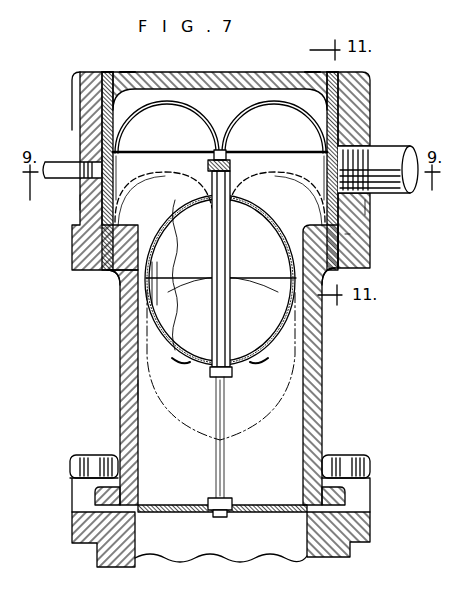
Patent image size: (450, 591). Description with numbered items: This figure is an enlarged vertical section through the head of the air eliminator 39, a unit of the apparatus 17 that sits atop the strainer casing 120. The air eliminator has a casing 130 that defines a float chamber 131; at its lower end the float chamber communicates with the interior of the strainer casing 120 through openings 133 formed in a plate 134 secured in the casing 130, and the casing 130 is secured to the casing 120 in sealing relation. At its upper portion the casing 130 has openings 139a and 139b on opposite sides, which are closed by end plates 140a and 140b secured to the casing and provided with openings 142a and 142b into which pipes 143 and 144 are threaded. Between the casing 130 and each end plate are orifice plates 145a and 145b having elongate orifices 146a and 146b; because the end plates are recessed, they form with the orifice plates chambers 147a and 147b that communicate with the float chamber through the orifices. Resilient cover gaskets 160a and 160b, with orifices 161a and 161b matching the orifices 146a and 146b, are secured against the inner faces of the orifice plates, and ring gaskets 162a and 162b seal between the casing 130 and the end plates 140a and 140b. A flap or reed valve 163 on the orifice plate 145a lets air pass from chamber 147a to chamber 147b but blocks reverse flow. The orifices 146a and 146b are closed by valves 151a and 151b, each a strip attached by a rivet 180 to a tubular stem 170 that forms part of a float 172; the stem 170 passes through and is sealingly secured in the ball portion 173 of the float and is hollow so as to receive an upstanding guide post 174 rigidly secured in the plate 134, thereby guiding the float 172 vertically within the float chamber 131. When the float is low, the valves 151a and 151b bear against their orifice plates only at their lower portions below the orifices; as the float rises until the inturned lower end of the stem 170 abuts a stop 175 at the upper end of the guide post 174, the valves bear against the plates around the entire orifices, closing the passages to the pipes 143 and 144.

The valve 17 is at (445, 354).
The air eliminator 39 is at (60, 389).
The strainer casing 120 is at (97, 556).
The casing 130 is at (316, 425).
The float chamber 131 is at (306, 396).
The openings 133 is at (288, 513).
The plate 134 is at (233, 502).
The opening 139a is at (110, 110).
The opening 139b is at (328, 110).
The end plate 140a is at (88, 120).
The end plate 140b is at (352, 92).
The opening 142a is at (98, 195).
The opening 142b is at (358, 207).
The pipe 143 is at (60, 163).
The pipe 144 is at (395, 148).
The orifice plate 145a is at (108, 276).
The orifice plate 145b is at (340, 73).
The elongate orifice 146a is at (172, 176).
The elongate orifice 146b is at (326, 184).
The chamber 147a is at (100, 228).
The chamber 147b is at (348, 234).
The valve element or strip 151a is at (186, 96).
The valve 151b is at (281, 96).
The cover gasket 160a is at (128, 73).
The cover gasket 160b is at (323, 72).
The orifice 161a is at (114, 170).
The orifice 161b is at (330, 172).
The ring gasket 162a is at (103, 73).
The ring gasket 162b is at (338, 270).
The flap or reed valve 163 is at (360, 140).
The tubular stem 170 is at (228, 222).
The float 172 is at (257, 360).
The ball portion 173 is at (183, 355).
The guide post 174 is at (216, 462).
The stop 175 is at (210, 377).
The rivet 180 is at (222, 163).